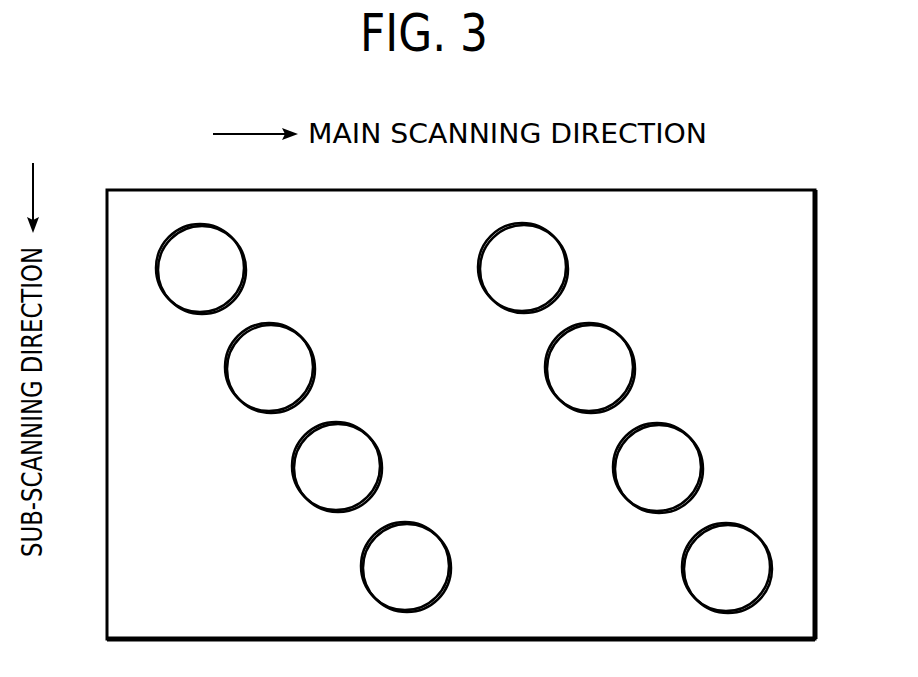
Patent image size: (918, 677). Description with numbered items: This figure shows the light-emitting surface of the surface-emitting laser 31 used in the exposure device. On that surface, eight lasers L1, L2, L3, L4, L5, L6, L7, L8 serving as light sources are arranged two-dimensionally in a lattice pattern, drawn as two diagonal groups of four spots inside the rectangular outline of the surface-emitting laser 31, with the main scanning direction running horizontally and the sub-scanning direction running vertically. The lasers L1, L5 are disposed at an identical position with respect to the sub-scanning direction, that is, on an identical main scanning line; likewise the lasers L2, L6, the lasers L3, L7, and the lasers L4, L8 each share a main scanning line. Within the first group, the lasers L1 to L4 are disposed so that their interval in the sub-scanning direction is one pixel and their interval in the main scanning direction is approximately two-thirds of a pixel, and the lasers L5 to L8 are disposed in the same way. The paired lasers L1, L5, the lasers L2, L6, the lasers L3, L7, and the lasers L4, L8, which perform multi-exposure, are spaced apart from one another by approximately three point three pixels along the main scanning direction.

The surface-emitting laser 31 is at (763, 188).
The laser L1 is at (247, 268).
The laser L2 is at (316, 367).
The laser L3 is at (383, 466).
The laser L4 is at (452, 566).
The laser L5 is at (569, 267).
The laser L6 is at (636, 367).
The laser L7 is at (703, 467).
The laser L8 is at (772, 567).